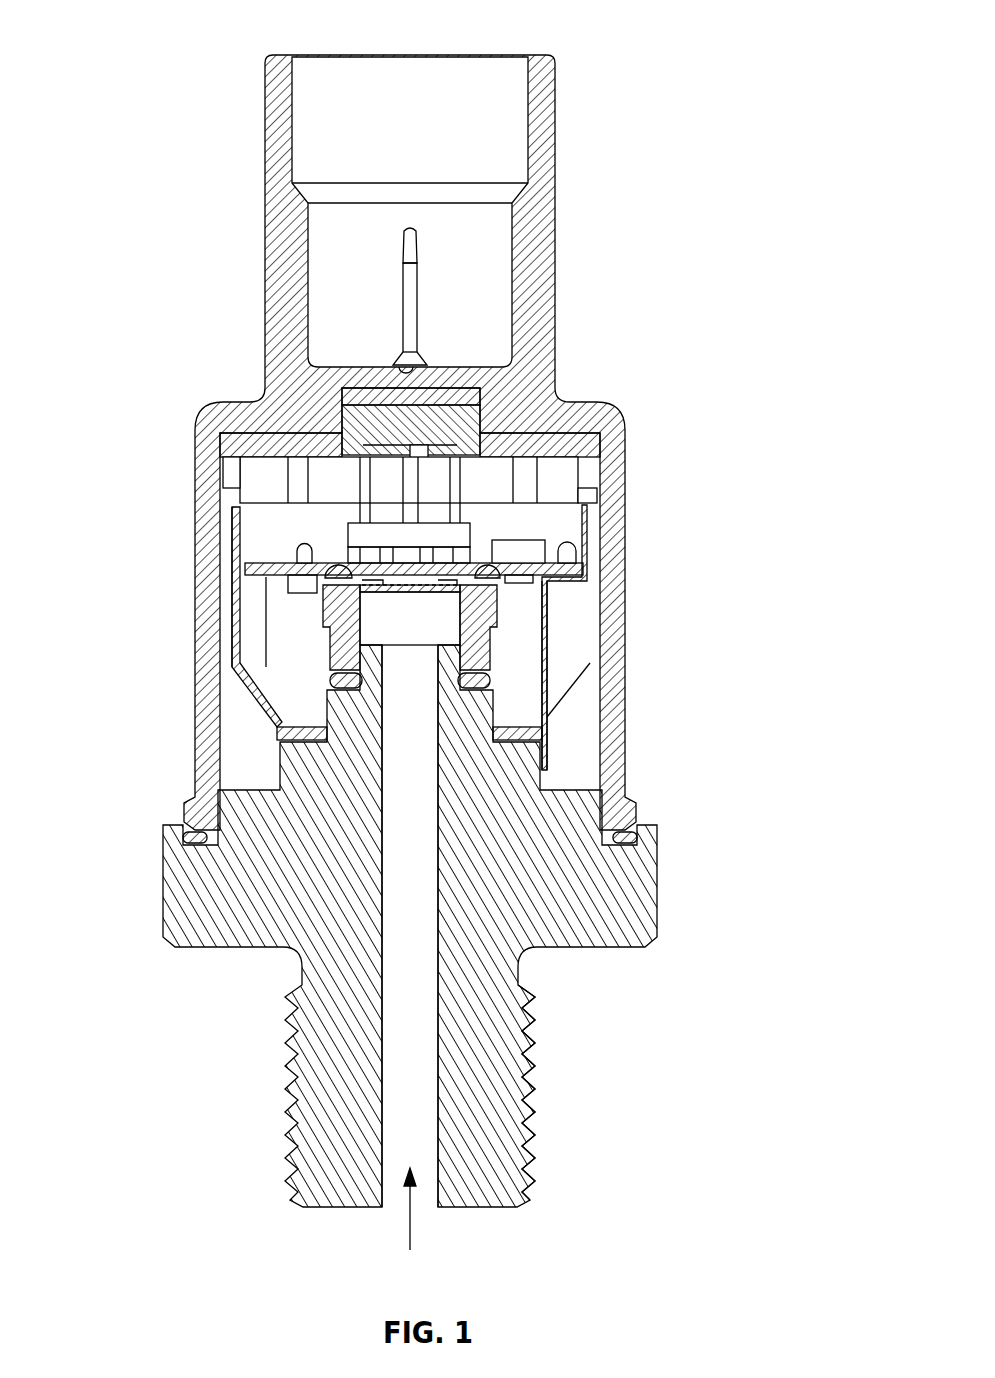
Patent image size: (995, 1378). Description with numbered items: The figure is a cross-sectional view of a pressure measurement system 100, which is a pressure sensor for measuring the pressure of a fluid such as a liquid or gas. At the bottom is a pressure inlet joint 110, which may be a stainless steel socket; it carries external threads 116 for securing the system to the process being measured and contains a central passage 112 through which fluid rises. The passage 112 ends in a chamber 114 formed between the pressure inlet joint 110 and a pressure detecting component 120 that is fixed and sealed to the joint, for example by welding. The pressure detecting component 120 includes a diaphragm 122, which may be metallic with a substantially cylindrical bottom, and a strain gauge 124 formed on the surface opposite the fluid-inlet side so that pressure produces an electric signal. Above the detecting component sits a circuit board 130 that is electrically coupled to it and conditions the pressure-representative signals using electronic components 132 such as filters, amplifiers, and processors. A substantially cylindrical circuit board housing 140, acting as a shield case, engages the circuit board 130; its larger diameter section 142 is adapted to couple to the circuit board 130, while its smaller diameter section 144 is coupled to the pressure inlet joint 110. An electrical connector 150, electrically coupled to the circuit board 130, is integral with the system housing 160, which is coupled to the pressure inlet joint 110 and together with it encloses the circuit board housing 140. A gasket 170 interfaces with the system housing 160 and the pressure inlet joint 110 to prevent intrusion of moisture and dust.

The pressure measurement system 100 is at (158, 42).
The pressure inlet joint 110 is at (638, 878).
The passage 112 is at (392, 925).
The chamber 114 is at (547, 717).
The threads 116 is at (537, 1068).
The pressure detecting component 120 is at (236, 665).
The diaphragm 122 is at (495, 602).
The strain gauge 124 is at (297, 560).
The circuit board 130 is at (533, 567).
The electronic components 132 is at (547, 548).
The circuit board housing 140 is at (577, 688).
The larger diameter section 142 is at (226, 548).
The smaller diameter section 144 is at (274, 733).
The electrical connector 150 is at (477, 363).
The system housing 160 is at (610, 408).
The gasket 170 is at (183, 832).